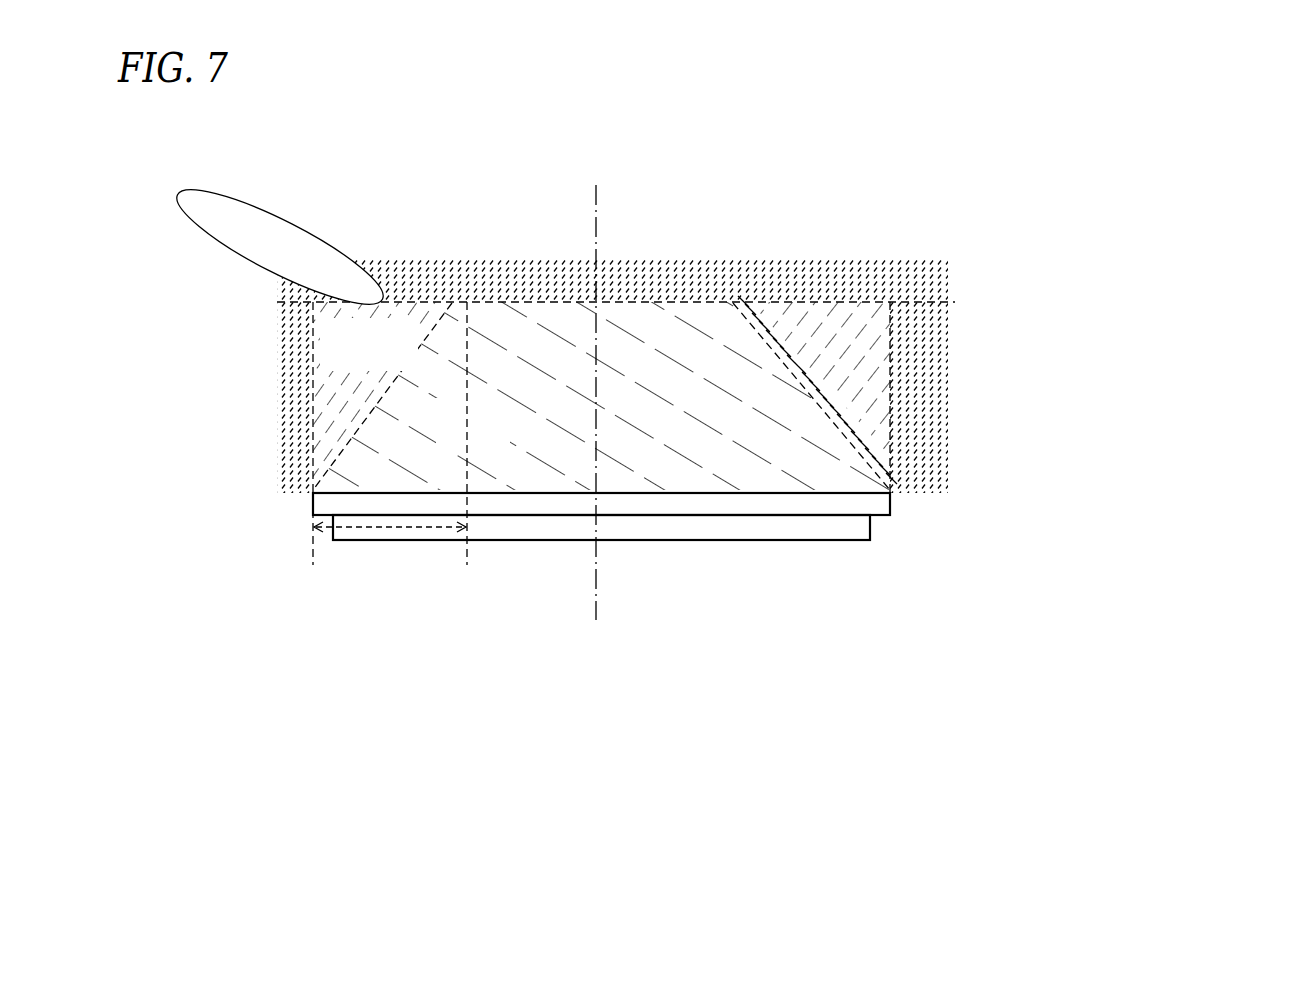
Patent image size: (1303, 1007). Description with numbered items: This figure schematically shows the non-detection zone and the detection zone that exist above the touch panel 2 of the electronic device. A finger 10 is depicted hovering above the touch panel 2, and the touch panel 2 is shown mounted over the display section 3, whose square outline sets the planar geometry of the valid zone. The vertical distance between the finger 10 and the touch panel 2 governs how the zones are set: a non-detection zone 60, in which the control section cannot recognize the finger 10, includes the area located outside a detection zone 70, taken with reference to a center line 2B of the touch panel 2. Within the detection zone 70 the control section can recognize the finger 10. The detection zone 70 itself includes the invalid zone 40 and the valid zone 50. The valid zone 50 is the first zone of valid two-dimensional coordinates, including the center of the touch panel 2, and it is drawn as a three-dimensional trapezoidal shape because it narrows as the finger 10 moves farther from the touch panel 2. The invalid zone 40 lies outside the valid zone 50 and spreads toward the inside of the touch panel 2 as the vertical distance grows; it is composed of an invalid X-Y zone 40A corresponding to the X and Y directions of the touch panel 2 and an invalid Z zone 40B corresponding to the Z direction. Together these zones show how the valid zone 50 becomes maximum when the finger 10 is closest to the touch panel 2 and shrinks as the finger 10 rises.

The touch panel 2 is at (890, 503).
The center line of the touch panel 2B is at (598, 590).
The display section 3 is at (870, 527).
The finger 10 is at (327, 247).
The invalid zone 40 is at (424, 323).
The invalid X-Y zone 40A is at (412, 542).
The invalid Z zone 40B is at (290, 428).
The valid zone 50 is at (688, 475).
The non-detection zone 60 is at (657, 262).
The detection zone 70 is at (757, 303).